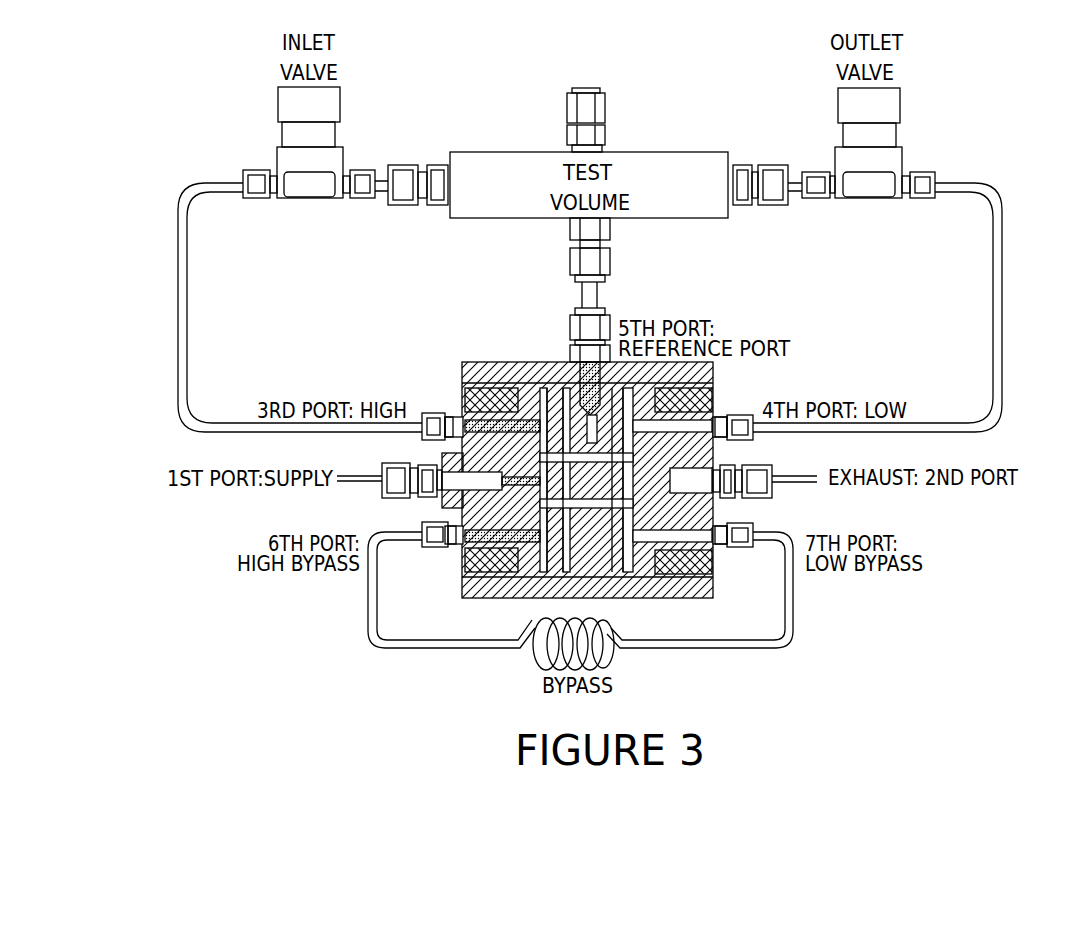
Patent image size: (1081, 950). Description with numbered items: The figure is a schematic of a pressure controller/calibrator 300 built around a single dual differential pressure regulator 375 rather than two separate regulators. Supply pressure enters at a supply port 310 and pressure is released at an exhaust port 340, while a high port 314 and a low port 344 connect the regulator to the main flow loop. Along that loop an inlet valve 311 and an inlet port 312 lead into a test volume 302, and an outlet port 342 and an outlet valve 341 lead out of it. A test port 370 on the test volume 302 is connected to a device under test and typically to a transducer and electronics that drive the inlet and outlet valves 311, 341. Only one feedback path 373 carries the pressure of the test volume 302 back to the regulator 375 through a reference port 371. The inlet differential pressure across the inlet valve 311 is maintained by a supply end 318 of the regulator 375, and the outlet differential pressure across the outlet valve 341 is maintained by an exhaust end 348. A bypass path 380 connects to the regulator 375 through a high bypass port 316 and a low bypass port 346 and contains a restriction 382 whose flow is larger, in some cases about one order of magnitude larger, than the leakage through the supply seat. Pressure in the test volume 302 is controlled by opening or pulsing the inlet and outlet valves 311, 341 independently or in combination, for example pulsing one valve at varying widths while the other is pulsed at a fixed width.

The pressure controller/calibrator 300 is at (1003, 82).
The test volume 302 is at (663, 152).
The supply port 310 is at (380, 493).
The inlet valve 311 is at (278, 105).
The inlet port 312 is at (402, 165).
The high port 314 is at (430, 413).
The high bypass port 316 is at (437, 548).
The supply end 318 is at (358, 592).
The exhaust port 340 is at (757, 466).
The outlet valve 341 is at (900, 103).
The outlet port 342 is at (808, 172).
The low port 344 is at (740, 413).
The low bypass port 346 is at (755, 523).
The exhaust end 348 is at (863, 665).
The test port 370 is at (605, 95).
The reference port 371 is at (570, 327).
The feedback path 373 is at (600, 290).
The dual differential pressure regulator 375 is at (697, 600).
The bypass path 380 is at (483, 648).
The restriction 382 is at (605, 660).